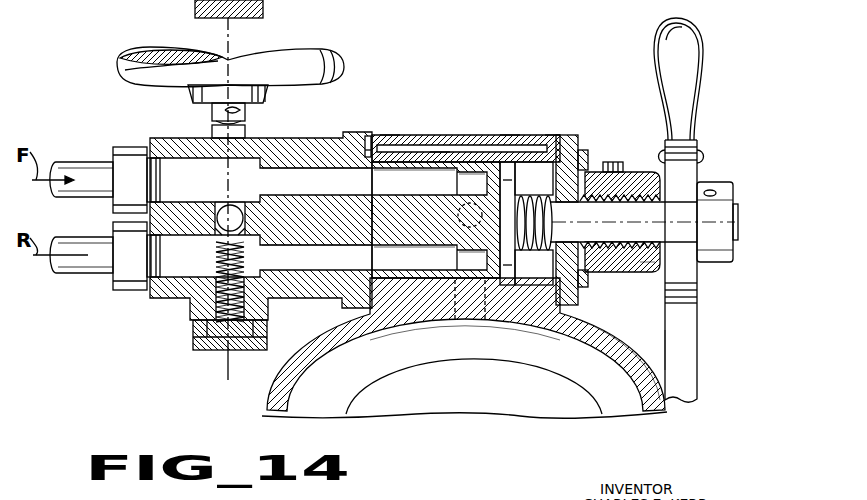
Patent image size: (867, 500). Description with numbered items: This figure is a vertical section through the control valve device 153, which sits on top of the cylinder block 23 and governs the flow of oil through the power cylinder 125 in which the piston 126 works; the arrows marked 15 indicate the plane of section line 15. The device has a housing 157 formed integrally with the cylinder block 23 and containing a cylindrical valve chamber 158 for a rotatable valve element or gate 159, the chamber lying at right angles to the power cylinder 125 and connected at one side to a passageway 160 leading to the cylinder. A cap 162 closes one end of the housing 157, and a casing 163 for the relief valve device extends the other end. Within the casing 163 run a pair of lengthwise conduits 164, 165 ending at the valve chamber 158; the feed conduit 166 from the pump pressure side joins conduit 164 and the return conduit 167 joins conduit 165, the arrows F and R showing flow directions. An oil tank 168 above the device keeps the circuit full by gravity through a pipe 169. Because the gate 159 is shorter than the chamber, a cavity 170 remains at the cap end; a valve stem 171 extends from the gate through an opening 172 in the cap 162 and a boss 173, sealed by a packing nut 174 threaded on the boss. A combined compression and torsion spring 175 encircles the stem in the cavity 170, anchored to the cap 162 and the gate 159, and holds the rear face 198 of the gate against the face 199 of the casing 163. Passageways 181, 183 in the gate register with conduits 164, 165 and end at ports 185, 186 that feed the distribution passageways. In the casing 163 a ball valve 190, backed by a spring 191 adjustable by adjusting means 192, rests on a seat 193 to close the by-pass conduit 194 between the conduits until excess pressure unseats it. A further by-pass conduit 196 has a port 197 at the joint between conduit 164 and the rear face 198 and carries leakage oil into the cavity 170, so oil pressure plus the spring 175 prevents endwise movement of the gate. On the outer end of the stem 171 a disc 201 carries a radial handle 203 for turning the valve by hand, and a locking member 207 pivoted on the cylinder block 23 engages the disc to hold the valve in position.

The section line 15- 15 is at (272, 36).
The cylinder block 23 is at (597, 370).
The cylinder 125 is at (310, 417).
The piston 126 is at (428, 394).
The control valve device 153 is at (511, 136).
The housing 157 is at (430, 136).
The valve chamber 158 is at (549, 134).
The valve element 159 is at (441, 158).
The passageway 160 is at (465, 339).
The cap 162 is at (579, 139).
The relief valve casing 163 is at (313, 133).
The conduit 164 is at (338, 192).
The conduit 165 is at (329, 265).
The conduit 166 is at (68, 167).
The conduit 167 is at (83, 275).
The tank 168 is at (280, 79).
The pipe 169 is at (212, 107).
The cavity 170 is at (546, 184).
The valve stem 171 is at (616, 230).
The opening 172 is at (585, 195).
The boss 173 is at (592, 258).
The packing nut 174 is at (646, 270).
The combined compression and torsion spring 175 is at (549, 254).
The passageway 181 is at (428, 193).
The passageway 183 is at (428, 265).
The port 185 is at (482, 193).
The port 186 is at (480, 266).
The ball valve 190 is at (247, 218).
The spring 191 is at (217, 255).
The adjusting means 192 is at (198, 2).
The seat 193 is at (216, 219).
The by-pass conduit 194 is at (224, 204).
The by-pass conduit 196 is at (391, 134).
The port 197 is at (368, 150).
The rear face 198 is at (374, 224).
The face 199 is at (373, 208).
The disc 201 is at (689, 167).
The handle 203 is at (688, 47).
The locking member 207 is at (689, 347).